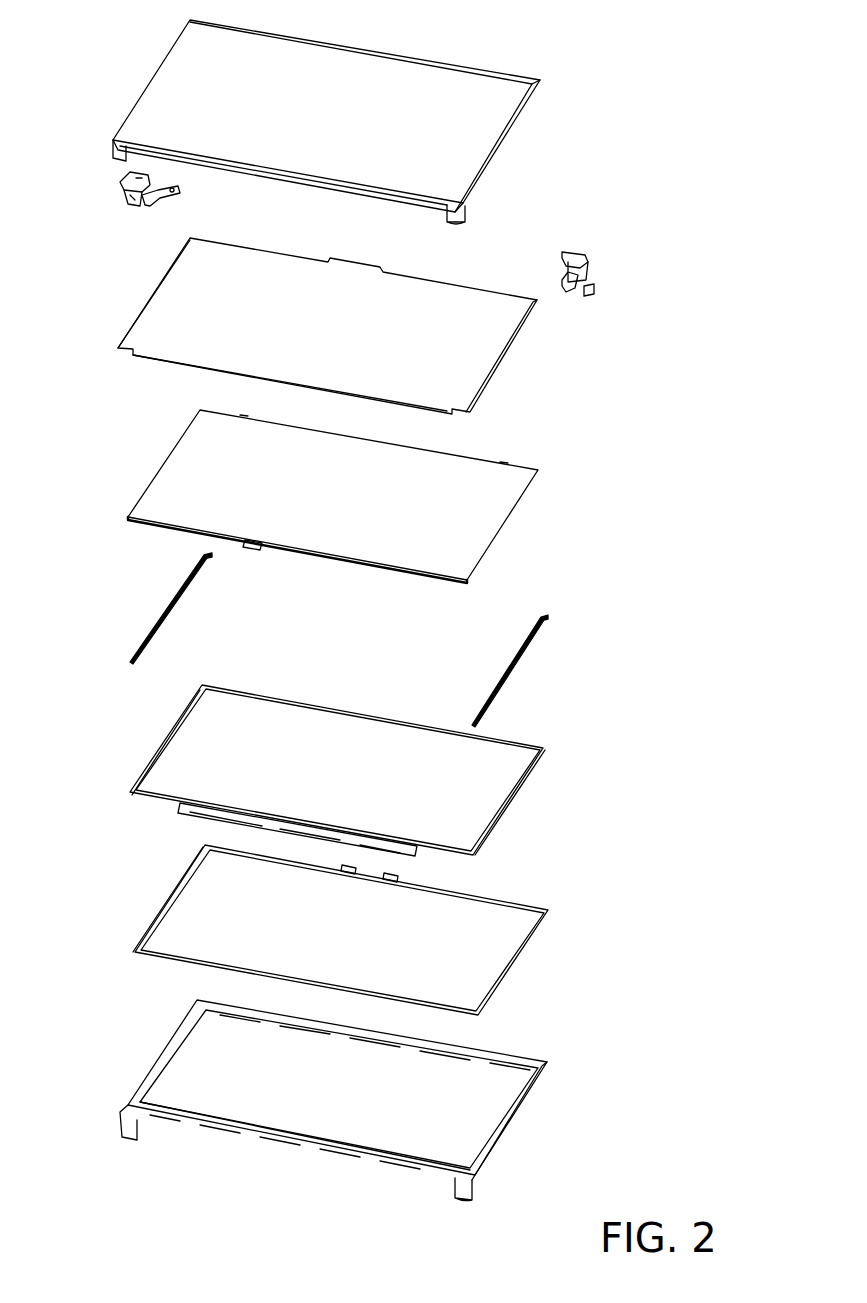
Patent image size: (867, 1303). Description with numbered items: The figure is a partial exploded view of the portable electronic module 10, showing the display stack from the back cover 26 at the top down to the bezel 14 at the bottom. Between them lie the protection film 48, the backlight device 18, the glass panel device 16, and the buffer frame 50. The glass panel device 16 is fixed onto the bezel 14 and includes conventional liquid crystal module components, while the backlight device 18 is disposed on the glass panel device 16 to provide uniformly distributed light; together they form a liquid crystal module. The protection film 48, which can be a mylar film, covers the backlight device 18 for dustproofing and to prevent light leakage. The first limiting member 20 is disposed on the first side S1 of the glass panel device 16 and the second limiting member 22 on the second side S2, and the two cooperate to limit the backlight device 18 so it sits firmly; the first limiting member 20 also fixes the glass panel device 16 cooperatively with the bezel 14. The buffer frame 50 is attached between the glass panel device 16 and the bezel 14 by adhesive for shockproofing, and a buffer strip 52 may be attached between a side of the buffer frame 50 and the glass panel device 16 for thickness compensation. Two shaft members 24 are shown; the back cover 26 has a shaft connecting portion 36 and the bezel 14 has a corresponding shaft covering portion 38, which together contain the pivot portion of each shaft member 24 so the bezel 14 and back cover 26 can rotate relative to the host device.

The portable electronic module 10 is at (640, 52).
The bezel 14 is at (160, 1062).
The glass panel device 16 is at (494, 796).
The backlight device 18 is at (492, 508).
The first limiting member 20 is at (526, 656).
The second limiting member 22 is at (162, 610).
The shaft member 24 is at (112, 190).
The back cover 26 is at (485, 85).
The shaft connecting portion 36 is at (468, 212).
The shaft covering portion 38 is at (477, 1198).
The protection film 48 is at (498, 347).
The buffer frame 50 is at (482, 1018).
The buffer strip 52 is at (165, 908).
The first side S1 is at (546, 750).
The second side S2 is at (186, 718).